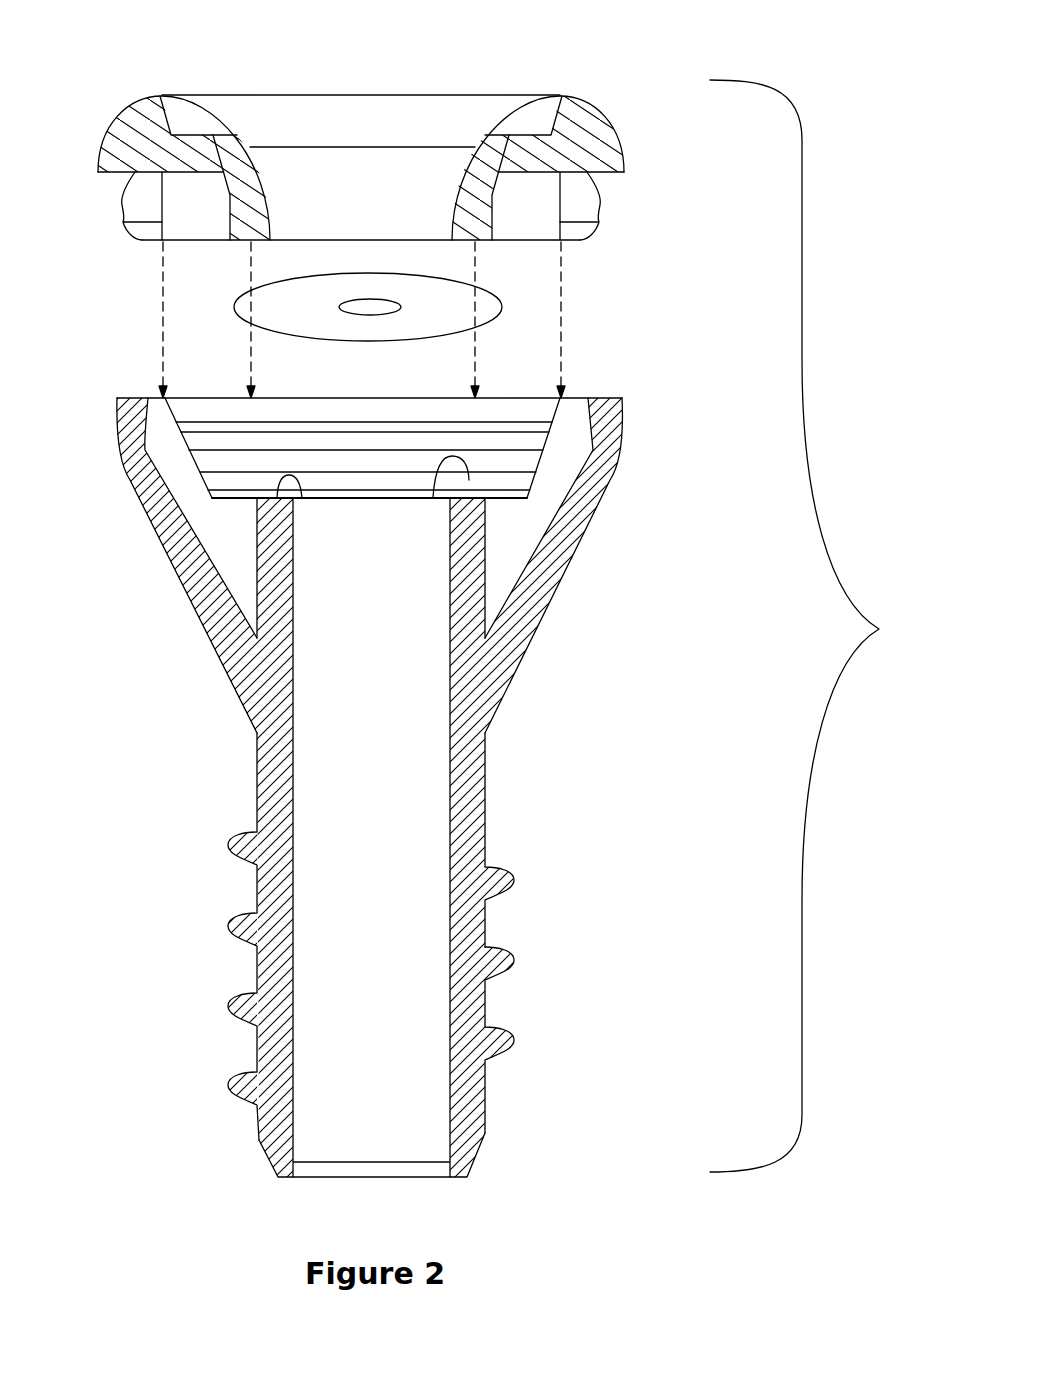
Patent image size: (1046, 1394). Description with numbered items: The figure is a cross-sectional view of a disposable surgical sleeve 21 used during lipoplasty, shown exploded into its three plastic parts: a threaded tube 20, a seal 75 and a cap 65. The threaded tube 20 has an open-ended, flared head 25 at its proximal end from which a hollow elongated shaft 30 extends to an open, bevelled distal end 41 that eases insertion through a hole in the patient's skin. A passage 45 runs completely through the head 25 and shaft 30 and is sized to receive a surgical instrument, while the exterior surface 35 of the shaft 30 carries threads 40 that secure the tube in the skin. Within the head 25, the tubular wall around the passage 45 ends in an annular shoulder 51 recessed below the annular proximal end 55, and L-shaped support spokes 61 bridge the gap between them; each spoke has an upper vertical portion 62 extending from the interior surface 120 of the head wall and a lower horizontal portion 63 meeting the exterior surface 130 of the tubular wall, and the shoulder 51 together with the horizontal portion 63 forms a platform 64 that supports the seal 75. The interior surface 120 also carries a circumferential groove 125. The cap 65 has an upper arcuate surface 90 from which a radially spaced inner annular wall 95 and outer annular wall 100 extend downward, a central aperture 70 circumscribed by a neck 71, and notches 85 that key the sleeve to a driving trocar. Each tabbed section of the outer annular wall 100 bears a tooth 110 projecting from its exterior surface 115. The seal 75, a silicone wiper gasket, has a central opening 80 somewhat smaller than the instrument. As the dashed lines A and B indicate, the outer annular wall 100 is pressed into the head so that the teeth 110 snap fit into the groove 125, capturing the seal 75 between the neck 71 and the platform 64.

The threaded tube 20 is at (420, 770).
The sleeve 21 is at (817, 626).
The flared head 25 is at (143, 447).
The hollow elongated shaft 30 is at (258, 1117).
The exterior surface 35 is at (485, 935).
The threads 40 is at (503, 878).
The distal end 41 is at (477, 1157).
The passage 45 is at (343, 741).
The annular shoulder 51 is at (299, 492).
The annular proximal end 55 is at (127, 397).
The L-shaped support spokes 61 is at (522, 546).
The upper vertical portion 62 is at (547, 442).
The lower horizontal portion 63 is at (517, 500).
The platform 64 is at (440, 468).
The cap 65 is at (350, 145).
The central aperture 70 is at (340, 146).
The neck 71 is at (483, 243).
The seal 75 is at (368, 312).
The central opening 80 is at (367, 307).
The notches 85 is at (520, 133).
The upper arcuate surface 90 is at (152, 97).
The inner annular wall 95 is at (253, 195).
The outer annular wall 100 is at (142, 210).
The tooth 110 is at (590, 225).
The exterior surface 115 is at (577, 198).
The interior surface 120 is at (495, 397).
The circumferential groove 125 is at (243, 441).
The exterior surface 130 is at (253, 537).
The dashed line A is at (562, 312).
The dashed line B is at (252, 260).